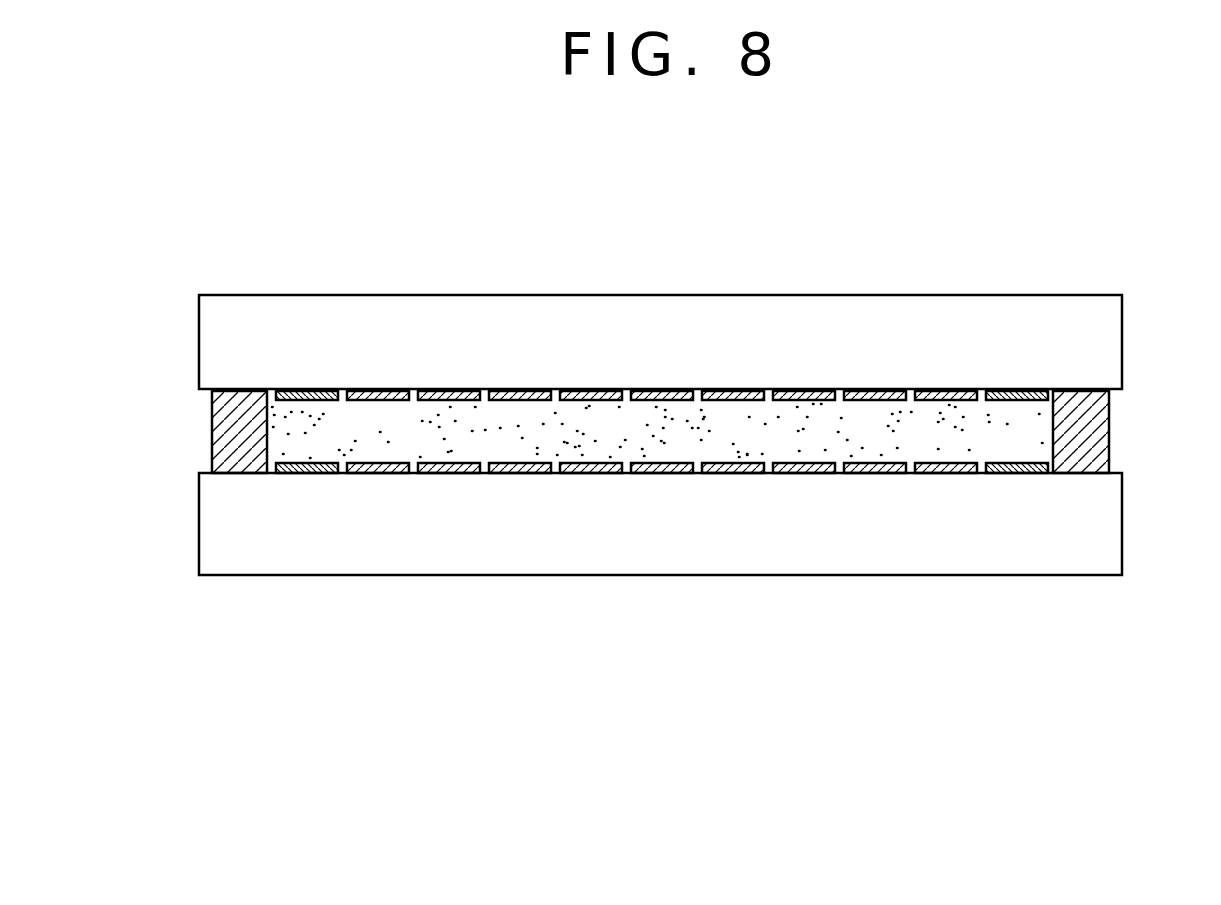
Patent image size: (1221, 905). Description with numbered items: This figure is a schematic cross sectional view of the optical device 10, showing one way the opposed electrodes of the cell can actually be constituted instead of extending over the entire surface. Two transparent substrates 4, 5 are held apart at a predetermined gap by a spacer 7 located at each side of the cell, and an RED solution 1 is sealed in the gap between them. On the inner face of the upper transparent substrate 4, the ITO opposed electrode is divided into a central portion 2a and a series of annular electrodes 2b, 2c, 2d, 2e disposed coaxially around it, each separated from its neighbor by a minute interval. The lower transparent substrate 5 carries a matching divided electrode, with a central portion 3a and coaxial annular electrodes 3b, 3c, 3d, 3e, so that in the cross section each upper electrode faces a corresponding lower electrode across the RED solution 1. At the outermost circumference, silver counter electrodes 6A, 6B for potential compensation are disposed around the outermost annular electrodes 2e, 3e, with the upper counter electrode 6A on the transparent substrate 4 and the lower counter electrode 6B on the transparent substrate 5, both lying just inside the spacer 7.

The RED solution 1 is at (1040, 424).
The central portion 2a is at (663, 391).
The annular electrode 2b is at (594, 391).
The annular electrode 2c is at (526, 391).
The annular electrode 2d is at (450, 391).
The annular electrode 2e is at (383, 391).
The central portion 3a is at (664, 473).
The annular electrode 3b is at (595, 473).
The annular electrode 3c is at (526, 473).
The annular electrode 3d is at (449, 473).
The annular electrode 3e is at (378, 473).
The transparent substrate 4 is at (485, 312).
The transparent substrate 5 is at (487, 555).
The silver counter electrode 6A is at (305, 391).
The silver counter electrode 6B is at (302, 473).
The spacer 7 is at (222, 430).
The optical device 10 is at (630, 278).